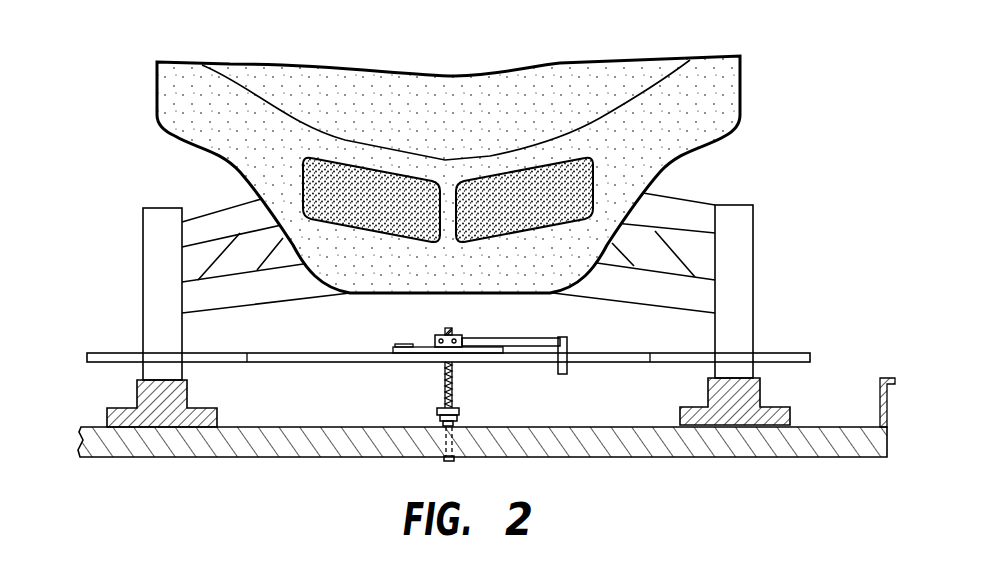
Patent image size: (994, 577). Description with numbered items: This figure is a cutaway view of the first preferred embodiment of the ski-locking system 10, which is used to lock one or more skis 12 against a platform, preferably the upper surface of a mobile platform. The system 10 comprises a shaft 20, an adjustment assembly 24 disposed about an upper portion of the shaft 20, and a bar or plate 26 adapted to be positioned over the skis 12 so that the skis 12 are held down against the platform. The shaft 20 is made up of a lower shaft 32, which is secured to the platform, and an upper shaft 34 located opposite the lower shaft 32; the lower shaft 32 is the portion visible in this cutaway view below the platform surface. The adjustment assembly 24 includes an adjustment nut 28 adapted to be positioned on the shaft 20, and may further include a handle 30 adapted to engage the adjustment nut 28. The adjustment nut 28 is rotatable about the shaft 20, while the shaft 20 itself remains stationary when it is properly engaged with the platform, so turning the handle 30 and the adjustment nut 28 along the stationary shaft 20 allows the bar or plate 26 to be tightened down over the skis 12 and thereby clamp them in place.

The system 10 is at (740, 180).
The skis 12 is at (162, 397).
The shaft 20 is at (445, 395).
The adjustment assembly 24 is at (510, 337).
The bar or plate 26 is at (130, 352).
The adjustment nut 28 is at (440, 335).
The handle 30 is at (593, 343).
The lower shaft 32 is at (447, 442).
The upper shaft 34 is at (453, 373).